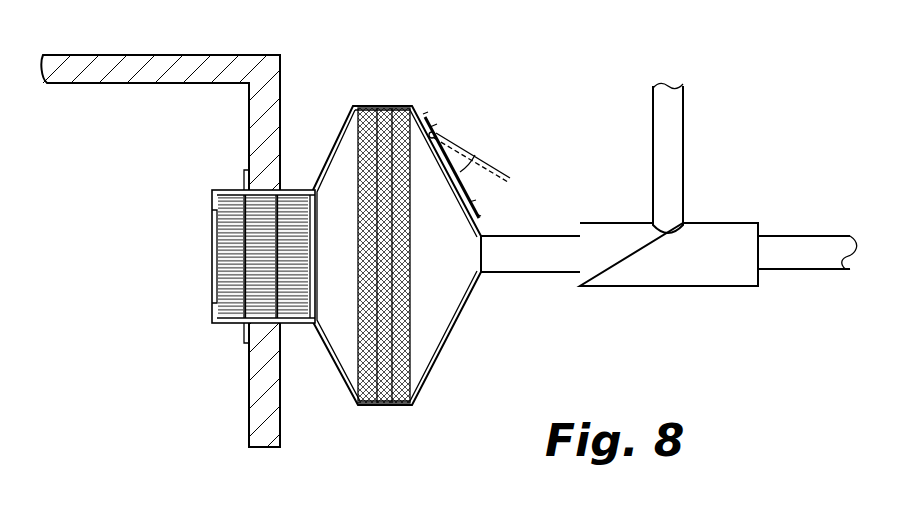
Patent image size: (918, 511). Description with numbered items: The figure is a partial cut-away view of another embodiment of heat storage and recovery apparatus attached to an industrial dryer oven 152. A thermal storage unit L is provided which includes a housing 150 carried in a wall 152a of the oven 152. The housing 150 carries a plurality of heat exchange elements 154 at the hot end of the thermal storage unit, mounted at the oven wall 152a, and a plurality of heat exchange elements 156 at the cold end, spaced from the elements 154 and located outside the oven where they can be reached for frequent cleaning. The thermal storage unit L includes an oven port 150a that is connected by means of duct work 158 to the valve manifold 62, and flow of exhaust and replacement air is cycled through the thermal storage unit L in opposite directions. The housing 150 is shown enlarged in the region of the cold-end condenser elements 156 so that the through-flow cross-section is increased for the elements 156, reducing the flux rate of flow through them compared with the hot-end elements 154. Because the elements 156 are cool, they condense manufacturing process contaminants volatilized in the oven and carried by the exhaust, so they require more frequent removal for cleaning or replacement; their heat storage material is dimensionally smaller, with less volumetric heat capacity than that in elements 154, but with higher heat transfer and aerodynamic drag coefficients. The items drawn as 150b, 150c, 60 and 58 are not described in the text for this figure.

The industrial dryer oven 152 is at (279, 68).
The wall 152a is at (284, 135).
The housing 150 is at (403, 407).
The oven port 150a is at (220, 242).
The housing outlet neck 150b is at (503, 244).
The hinged access door / clip 150c is at (457, 168).
The heat exchange elements 154 is at (218, 290).
The heat exchange elements 156 is at (415, 328).
The duct work 158 is at (552, 272).
The inlet tube 60 is at (687, 118).
The valve manifold 62 is at (725, 223).
The outlet tube 58 is at (795, 236).
The thermal storage unit L is at (398, 106).